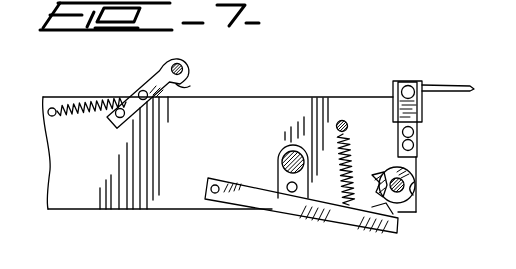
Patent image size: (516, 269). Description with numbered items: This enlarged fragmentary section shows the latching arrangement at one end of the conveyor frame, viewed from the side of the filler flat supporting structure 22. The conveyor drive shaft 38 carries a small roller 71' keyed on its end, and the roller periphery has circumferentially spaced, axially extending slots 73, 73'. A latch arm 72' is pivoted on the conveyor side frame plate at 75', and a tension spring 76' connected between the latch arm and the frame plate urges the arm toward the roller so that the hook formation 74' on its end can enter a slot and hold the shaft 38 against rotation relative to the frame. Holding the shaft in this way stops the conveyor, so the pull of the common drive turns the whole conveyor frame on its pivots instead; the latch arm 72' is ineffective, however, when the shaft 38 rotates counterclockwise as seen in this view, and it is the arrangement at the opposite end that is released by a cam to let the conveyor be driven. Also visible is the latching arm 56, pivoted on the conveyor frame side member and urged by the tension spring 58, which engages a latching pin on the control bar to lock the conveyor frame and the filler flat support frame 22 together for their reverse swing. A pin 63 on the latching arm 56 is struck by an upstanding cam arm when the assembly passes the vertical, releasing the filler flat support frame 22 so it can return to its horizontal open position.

The filler flat supporting structure 22 is at (463, 92).
The conveyor drive shaft 38 is at (412, 180).
The latching arm 56 is at (181, 88).
The tension spring 58 is at (98, 97).
The pin 63 is at (183, 62).
The roller 71' is at (421, 182).
The latch arm 72' is at (301, 214).
The slot 73 is at (438, 197).
The slot 73' is at (382, 167).
The hook formation 74' is at (410, 225).
The pivot 75' is at (220, 218).
The tension spring 76' is at (361, 154).